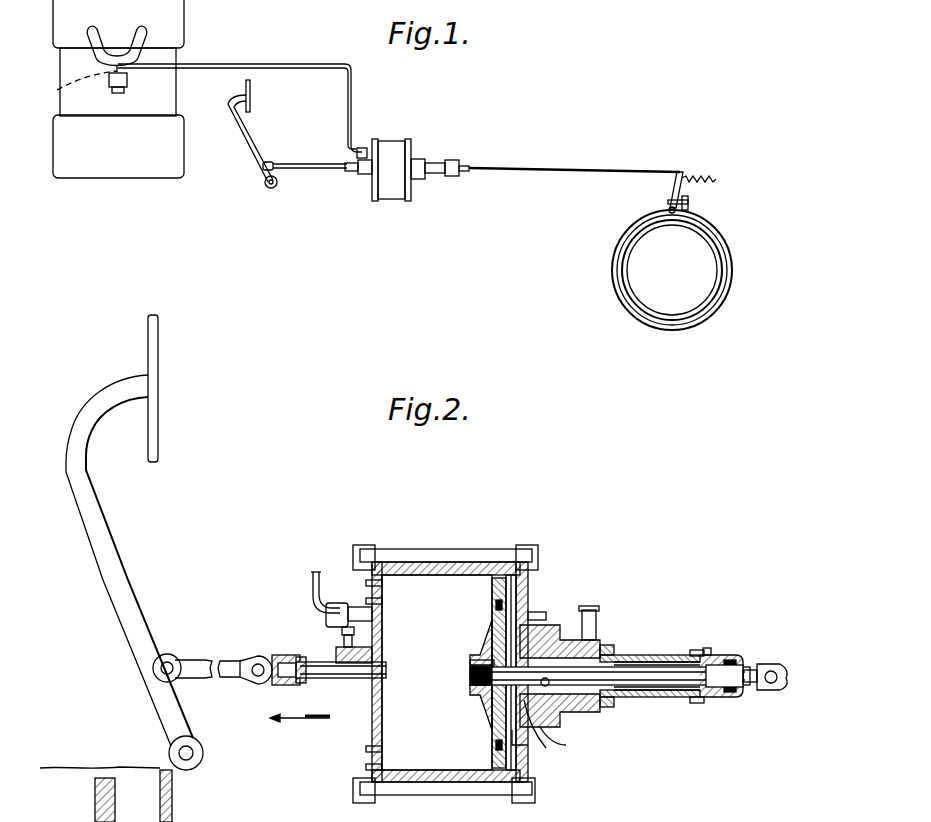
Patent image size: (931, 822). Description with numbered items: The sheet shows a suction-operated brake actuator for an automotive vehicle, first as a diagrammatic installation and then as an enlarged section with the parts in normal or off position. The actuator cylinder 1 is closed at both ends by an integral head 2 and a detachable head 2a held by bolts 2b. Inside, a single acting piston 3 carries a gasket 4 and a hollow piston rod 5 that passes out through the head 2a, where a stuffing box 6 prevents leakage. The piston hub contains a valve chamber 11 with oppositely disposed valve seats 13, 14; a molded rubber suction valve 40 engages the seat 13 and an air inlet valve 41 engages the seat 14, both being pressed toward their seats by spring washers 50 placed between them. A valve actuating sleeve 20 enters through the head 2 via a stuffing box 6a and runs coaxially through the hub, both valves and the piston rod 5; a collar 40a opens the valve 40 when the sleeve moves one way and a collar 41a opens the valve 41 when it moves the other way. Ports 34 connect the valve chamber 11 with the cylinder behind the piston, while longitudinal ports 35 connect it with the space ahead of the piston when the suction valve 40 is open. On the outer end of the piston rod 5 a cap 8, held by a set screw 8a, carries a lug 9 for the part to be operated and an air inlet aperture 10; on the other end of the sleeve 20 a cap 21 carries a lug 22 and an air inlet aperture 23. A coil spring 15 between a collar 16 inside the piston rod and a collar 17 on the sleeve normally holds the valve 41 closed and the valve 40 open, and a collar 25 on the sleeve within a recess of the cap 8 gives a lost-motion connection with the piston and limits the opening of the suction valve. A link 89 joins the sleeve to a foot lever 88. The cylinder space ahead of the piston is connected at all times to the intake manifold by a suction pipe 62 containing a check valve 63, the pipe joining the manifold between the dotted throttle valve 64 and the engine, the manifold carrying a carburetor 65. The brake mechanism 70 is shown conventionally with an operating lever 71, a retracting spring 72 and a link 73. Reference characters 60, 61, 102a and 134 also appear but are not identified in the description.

In FIG. 1, the actuator cylinder 1 is at (392, 153).
In FIG. 2, the actuator cylinder 1 is at (450, 582).
In FIG. 1, the integral head 2 is at (374, 182).
In FIG. 2, the integral head 2 is at (372, 712).
In FIG. 1, the detachable head 2a is at (409, 181).
In FIG. 2, the detachable head 2a is at (524, 604).
In FIG. 2, the bolts 2b is at (440, 798).
In FIG. 2, the single acting piston 3 is at (504, 618).
In FIG. 2, the gasket 4 is at (510, 578).
In FIG. 1, the hollow piston rod 5 is at (436, 165).
In FIG. 2, the hollow piston rod 5 is at (630, 660).
In FIG. 2, the stuffing box 6 is at (560, 704).
In FIG. 2, the stuffing box 6a is at (380, 650).
In FIG. 1, the cap 8 is at (453, 176).
In FIG. 2, the cap 8 is at (726, 698).
In FIG. 2, the set screw 8a is at (707, 648).
In FIG. 1, the lug 9 is at (466, 167).
In FIG. 2, the lug 9 is at (757, 684).
In FIG. 2, the air inlet aperture 10 is at (756, 667).
In FIG. 2, the valve chamber 11 is at (530, 745).
In FIG. 2, the valve seat 13 is at (490, 700).
In FIG. 2, the valve seat 14 is at (538, 715).
In FIG. 2, the coil spring 15 is at (660, 698).
In FIG. 2, the collar 16 is at (610, 656).
In FIG. 2, the collar 17 is at (696, 653).
In FIG. 1, the valve actuating sleeve 20 is at (364, 174).
In FIG. 2, the valve actuating sleeve 20 is at (325, 680).
In FIG. 1, the cap 21 is at (352, 163).
In FIG. 2, the cap 21 is at (296, 680).
In FIG. 2, the lug 22 is at (262, 684).
In FIG. 2, the air inlet aperture 23 is at (283, 656).
In FIG. 2, the collar 25 is at (730, 660).
In FIG. 2, the port 34 is at (540, 620).
In FIG. 2, the longitudinal ports 35 is at (474, 662).
In FIG. 2, the suction valve 40 is at (486, 648).
In FIG. 2, the collar 40a is at (482, 696).
In FIG. 2, the air inlet valve 41 is at (583, 640).
In FIG. 2, the collar 41a is at (580, 734).
In FIG. 2, the spring washers 50 is at (550, 690).
In FIG. 1, the reservoir 60 is at (64, 21).
In FIG. 1, the bracket 61 is at (148, 35).
In FIG. 1, the suction pipe 62 is at (240, 108).
In FIG. 2, the suction pipe 62 is at (312, 592).
In FIG. 1, the check valve 63 is at (362, 150).
In FIG. 2, the check valve 63 is at (334, 612).
In FIG. 1, the throttle valve 64 is at (58, 90).
In FIG. 1, the carburetor 65 is at (110, 86).
In FIG. 1, the brake mechanism 70 is at (700, 253).
In FIG. 1, the operating lever 71 is at (676, 189).
In FIG. 1, the retracting spring 72 is at (692, 176).
In FIG. 1, the link 73 is at (562, 170).
In FIG. 1, the foot lever 88 is at (249, 138).
In FIG. 2, the foot lever 88 is at (114, 556).
In FIG. 1, the link 89 is at (298, 169).
In FIG. 2, the link 89 is at (218, 662).
In FIG. 2, the wall 102a is at (172, 800).
In FIG. 2, the member 134 is at (126, 800).